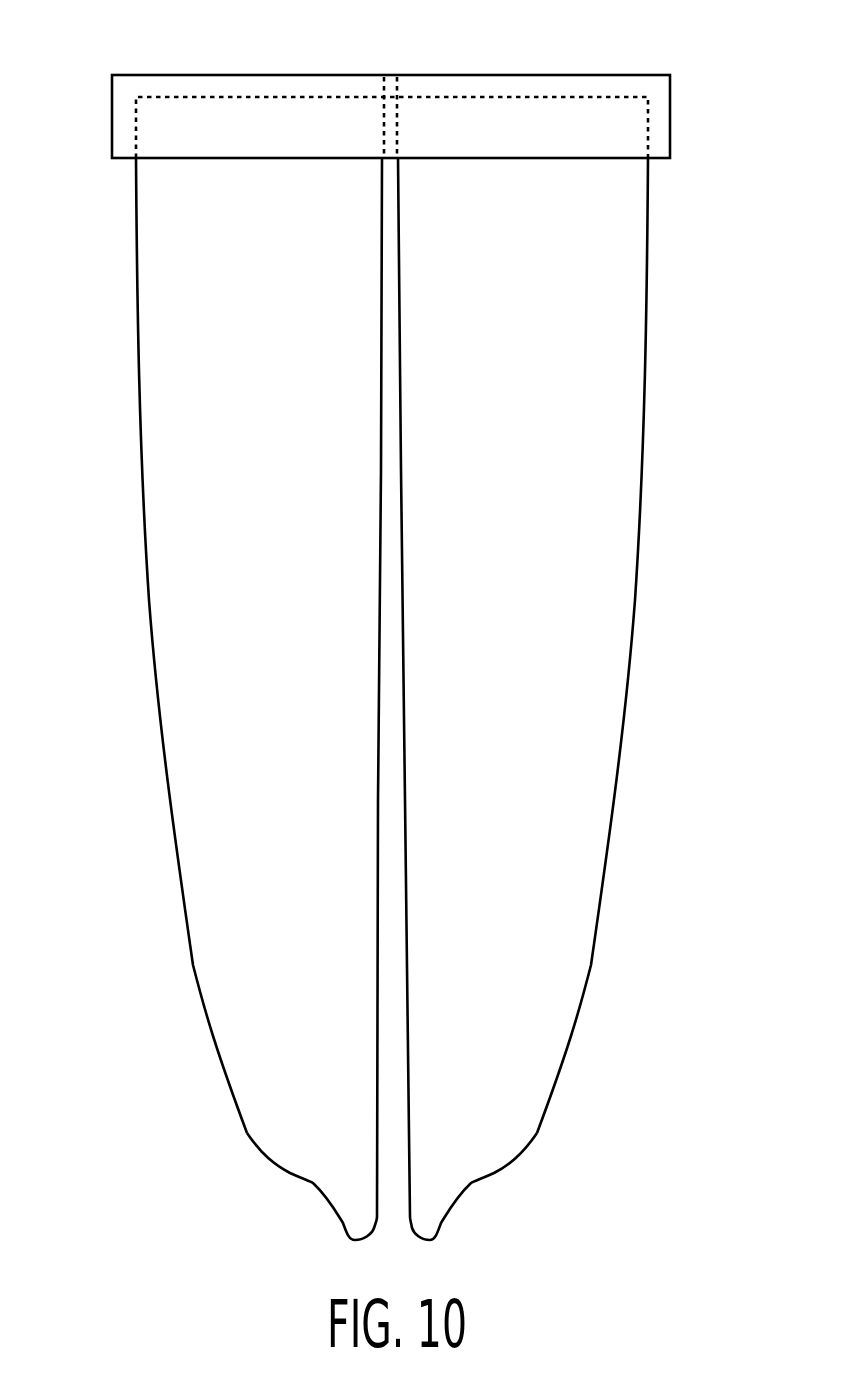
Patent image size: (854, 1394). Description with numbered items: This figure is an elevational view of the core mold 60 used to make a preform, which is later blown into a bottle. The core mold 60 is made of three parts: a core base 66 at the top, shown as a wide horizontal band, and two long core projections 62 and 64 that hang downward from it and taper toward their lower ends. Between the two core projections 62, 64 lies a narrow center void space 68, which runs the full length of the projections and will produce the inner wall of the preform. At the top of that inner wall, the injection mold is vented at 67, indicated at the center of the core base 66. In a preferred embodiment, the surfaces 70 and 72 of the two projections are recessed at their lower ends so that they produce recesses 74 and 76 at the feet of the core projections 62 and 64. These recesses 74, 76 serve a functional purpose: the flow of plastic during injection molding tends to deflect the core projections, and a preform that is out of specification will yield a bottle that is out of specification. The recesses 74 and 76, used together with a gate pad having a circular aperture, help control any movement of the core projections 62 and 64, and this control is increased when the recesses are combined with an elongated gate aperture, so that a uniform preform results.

The core mold 60 is at (662, 305).
The core projection 62 is at (180, 688).
The core projection 64 is at (582, 656).
The core base 66 is at (490, 80).
The vent 67 is at (391, 75).
The center void space 68 is at (392, 468).
The surface 70 is at (377, 1007).
The surface 72 is at (409, 989).
The recess 74 is at (318, 1190).
The recess 76 is at (462, 1200).